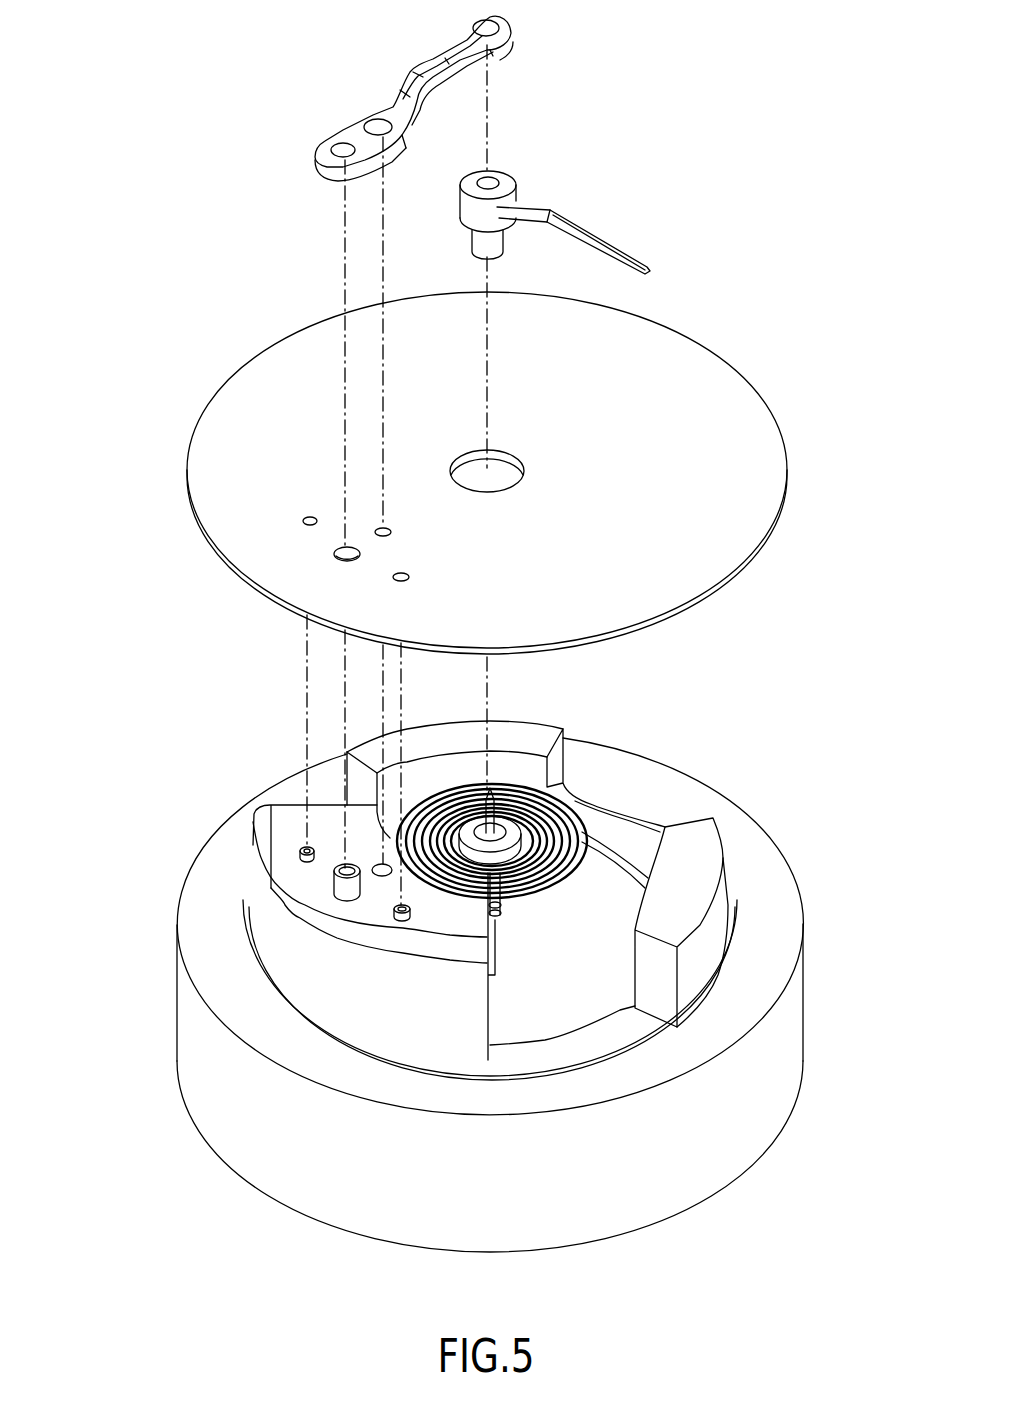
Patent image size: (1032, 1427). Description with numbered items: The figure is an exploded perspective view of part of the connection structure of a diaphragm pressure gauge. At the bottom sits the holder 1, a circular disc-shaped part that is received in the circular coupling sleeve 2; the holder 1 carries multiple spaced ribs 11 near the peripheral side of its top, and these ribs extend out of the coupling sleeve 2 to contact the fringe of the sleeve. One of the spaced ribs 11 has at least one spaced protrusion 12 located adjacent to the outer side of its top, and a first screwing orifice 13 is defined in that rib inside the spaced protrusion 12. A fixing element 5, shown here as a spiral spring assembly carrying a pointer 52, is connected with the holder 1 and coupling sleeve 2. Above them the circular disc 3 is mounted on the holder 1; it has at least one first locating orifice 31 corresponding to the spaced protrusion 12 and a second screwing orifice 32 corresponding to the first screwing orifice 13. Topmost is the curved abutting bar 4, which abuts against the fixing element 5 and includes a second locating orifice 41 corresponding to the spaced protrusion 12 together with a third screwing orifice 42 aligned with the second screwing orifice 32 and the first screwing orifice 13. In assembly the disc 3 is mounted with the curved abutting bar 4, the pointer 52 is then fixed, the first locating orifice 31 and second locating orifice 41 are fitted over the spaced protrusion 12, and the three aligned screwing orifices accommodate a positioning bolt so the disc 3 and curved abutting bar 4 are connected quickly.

The holder 1 is at (441, 999).
The coupling sleeve 2 is at (200, 1140).
The disc 3 is at (518, 491).
The curved abutting bar 4 is at (370, 94).
The fixing element 5 is at (613, 823).
The spaced ribs 11 is at (293, 952).
The spaced protrusion 12 is at (394, 910).
The first screwing orifice 13 is at (396, 877).
The first locating orifice 31 is at (395, 580).
The second screwing orifice 32 is at (392, 534).
The second locating orifice 41 is at (333, 148).
The third screwing orifice 42 is at (367, 124).
The pointer 52 is at (573, 220).